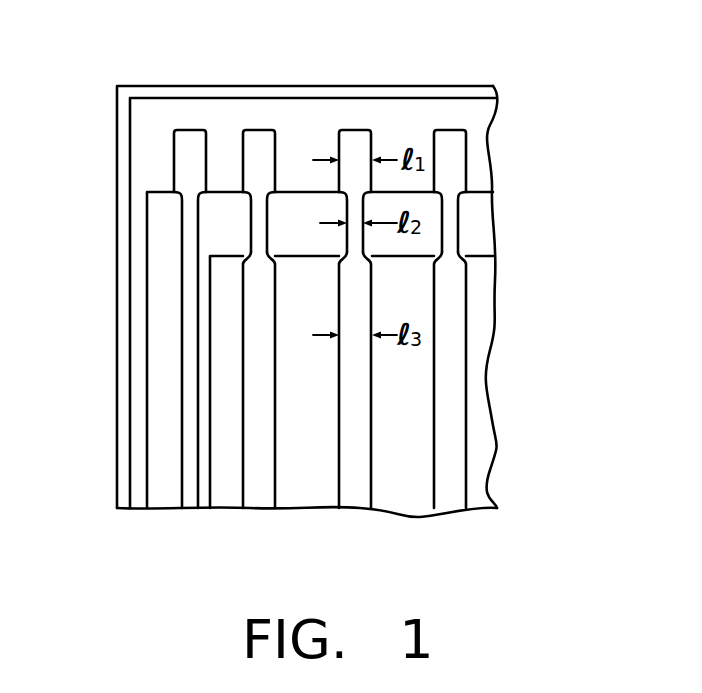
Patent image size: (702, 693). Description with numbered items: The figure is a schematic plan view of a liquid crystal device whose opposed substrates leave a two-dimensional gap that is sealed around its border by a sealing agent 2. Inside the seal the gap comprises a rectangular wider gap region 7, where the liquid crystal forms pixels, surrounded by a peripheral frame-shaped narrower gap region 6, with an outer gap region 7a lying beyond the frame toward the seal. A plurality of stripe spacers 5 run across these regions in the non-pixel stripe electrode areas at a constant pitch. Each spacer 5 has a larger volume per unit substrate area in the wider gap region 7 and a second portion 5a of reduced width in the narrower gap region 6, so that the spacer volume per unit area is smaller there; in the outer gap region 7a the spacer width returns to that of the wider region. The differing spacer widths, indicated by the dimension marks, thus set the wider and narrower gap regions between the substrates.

The sealing agent 2 is at (127, 507).
The spacers 5 is at (180, 162).
The second portion of spacer 5a is at (458, 212).
The narrower gap region 6 is at (155, 315).
The wider gap region 7 is at (217, 370).
The outer gap region 7a is at (308, 118).